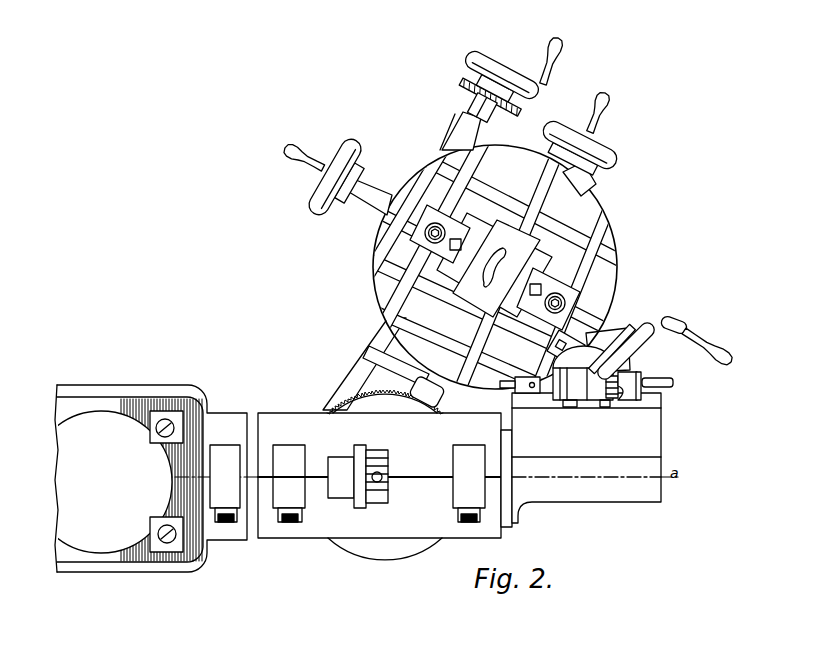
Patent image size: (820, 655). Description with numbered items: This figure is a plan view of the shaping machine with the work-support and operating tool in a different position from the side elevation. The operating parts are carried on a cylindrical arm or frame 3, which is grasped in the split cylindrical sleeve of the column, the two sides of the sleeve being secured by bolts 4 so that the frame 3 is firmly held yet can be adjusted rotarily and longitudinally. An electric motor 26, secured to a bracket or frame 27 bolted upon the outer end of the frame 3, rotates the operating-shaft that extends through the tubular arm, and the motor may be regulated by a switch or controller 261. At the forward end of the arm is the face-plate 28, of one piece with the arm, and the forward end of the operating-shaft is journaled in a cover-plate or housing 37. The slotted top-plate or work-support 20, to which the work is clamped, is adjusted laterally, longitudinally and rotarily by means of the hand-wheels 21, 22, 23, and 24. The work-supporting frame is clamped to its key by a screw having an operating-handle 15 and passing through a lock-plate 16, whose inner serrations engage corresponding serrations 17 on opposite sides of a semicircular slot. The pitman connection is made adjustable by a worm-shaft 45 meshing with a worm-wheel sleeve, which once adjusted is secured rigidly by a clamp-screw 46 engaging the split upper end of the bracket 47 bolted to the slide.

The arm or frame 3 is at (265, 493).
The bolts 4 is at (470, 478).
The operating-handle 15 is at (341, 398).
The lock-plate 16 is at (404, 404).
The serrations 17 is at (371, 398).
The slotted top-plate or work-support 20 is at (596, 237).
The hand-wheel 21 is at (348, 150).
The hand-wheel 22 is at (500, 72).
The hand-wheel 23 is at (569, 140).
The hand-wheel 24 is at (672, 334).
The electric motor 26 is at (101, 482).
The bracket or frame 27 is at (177, 554).
The face-plate 28 is at (643, 403).
The cover-plate or housing 37 is at (581, 460).
The worm-shaft 45 is at (652, 415).
The clamp-screw 46 is at (609, 400).
The bracket 47 is at (577, 392).
The switch or controller 261 is at (372, 503).